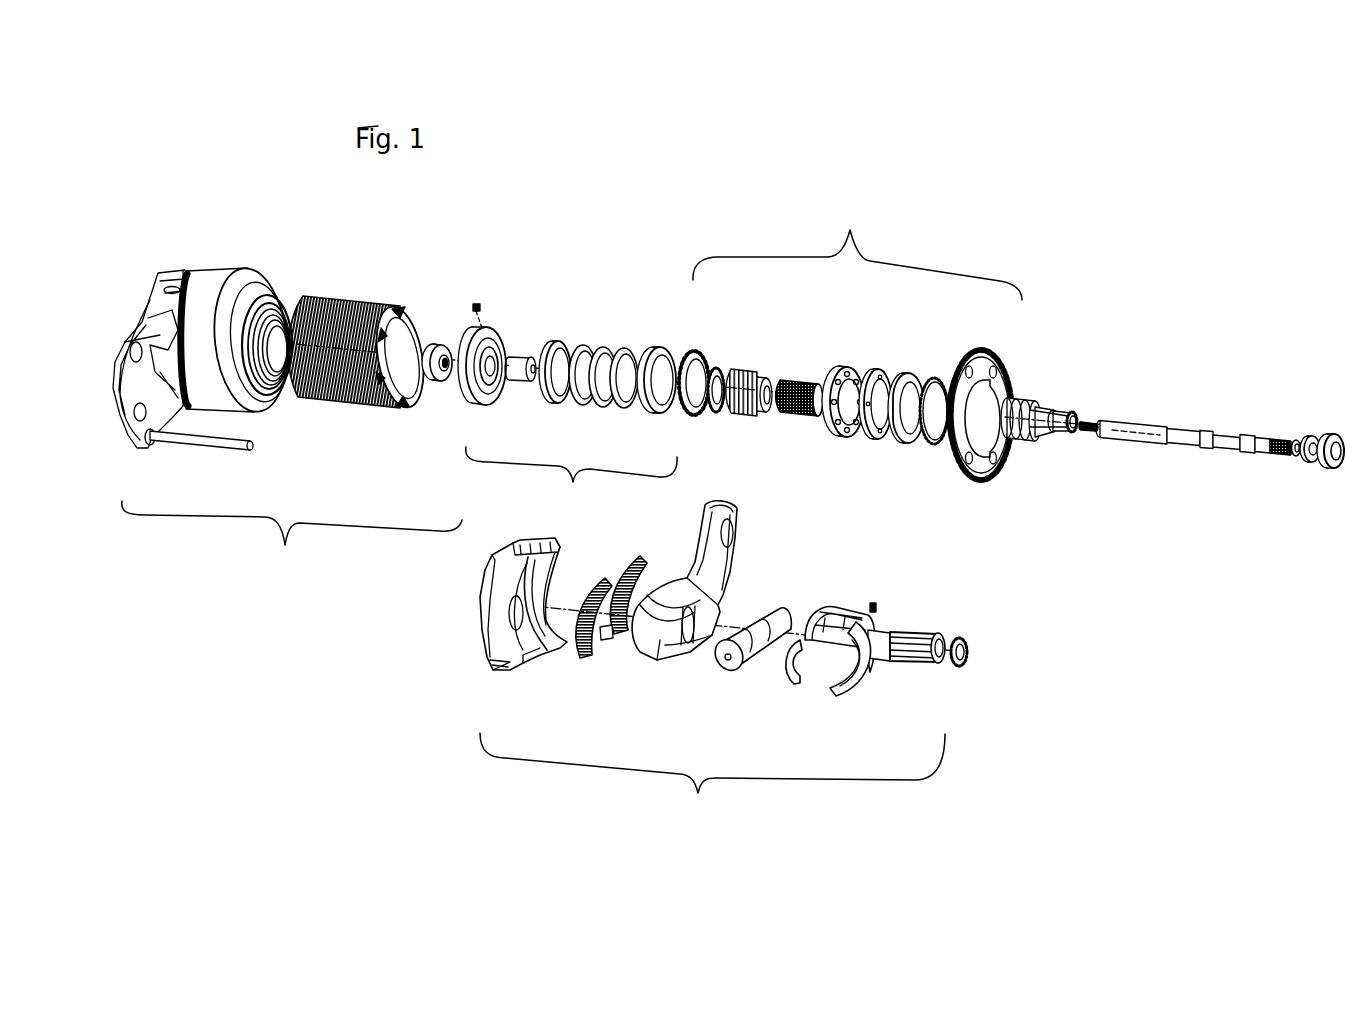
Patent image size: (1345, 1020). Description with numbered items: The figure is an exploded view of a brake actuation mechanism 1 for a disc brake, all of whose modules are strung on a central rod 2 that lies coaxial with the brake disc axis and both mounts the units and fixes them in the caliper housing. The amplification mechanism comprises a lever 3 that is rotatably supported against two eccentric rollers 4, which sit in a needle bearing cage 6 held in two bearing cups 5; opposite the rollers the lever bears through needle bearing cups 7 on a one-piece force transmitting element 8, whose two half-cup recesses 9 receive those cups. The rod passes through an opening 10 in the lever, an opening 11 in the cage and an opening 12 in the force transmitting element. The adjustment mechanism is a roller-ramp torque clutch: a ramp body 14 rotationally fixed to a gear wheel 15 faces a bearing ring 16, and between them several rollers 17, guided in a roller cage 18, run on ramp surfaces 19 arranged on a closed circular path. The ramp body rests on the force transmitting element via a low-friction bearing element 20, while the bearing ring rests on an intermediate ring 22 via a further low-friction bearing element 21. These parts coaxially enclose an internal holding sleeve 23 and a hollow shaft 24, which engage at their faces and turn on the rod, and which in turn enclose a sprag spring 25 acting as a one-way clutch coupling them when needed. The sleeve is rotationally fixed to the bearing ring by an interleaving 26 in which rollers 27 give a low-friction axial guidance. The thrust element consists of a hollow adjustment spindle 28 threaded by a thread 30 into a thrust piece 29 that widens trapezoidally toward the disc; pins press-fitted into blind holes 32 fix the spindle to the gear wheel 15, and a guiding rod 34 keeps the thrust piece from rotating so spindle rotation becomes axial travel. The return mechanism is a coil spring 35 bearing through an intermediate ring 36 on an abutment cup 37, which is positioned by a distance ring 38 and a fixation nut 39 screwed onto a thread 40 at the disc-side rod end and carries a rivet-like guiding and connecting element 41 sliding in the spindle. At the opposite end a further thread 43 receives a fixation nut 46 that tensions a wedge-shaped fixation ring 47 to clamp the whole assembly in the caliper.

The brake actuation mechanism 1 is at (729, 508).
The central rod 2 is at (1157, 432).
The lever 3 is at (706, 614).
The eccentric rollers 4 is at (785, 617).
The bearing cups 5 is at (857, 667).
The needle bearing cage 6 is at (790, 682).
The needle bearing cups 7 is at (603, 652).
The force transmitting element 8 is at (507, 665).
The recesses 9 is at (543, 592).
The opening 10 is at (690, 647).
The opening 11 is at (886, 640).
The opening 12 is at (503, 630).
The ramp body 14 is at (910, 368).
The gear wheel 15 is at (980, 367).
The bearing ring 16 is at (835, 365).
The rollers 17 is at (873, 442).
The roller cage 18 is at (899, 400).
The ramp surfaces 19 is at (831, 391).
The low-friction bearing element 20 is at (937, 447).
The low-friction bearing element 21 is at (703, 355).
The intermediate ring 22 is at (658, 415).
The internal holding sleeve 23 is at (742, 397).
The hollow shaft 24 is at (1047, 432).
The sprag spring 25 is at (788, 413).
The interleaving 26 is at (862, 368).
The rollers 27 is at (715, 422).
The hollow adjustment spindle 28 is at (395, 357).
The thrust piece 29 is at (222, 290).
The thread 30 is at (363, 411).
The blind holes 32 is at (415, 316).
The guiding rod 34 is at (197, 444).
The coil spring 35 is at (601, 345).
The intermediate ring 36 is at (559, 342).
The abutment cup 37 is at (473, 404).
The distance ring 38 is at (520, 382).
The fixation nut 39 is at (440, 385).
The thread 40 is at (1092, 432).
The guiding and connecting element 41 is at (478, 305).
The thread 43 is at (1277, 453).
The fixation nut 46 is at (1328, 435).
The fixation ring 47 is at (1312, 461).